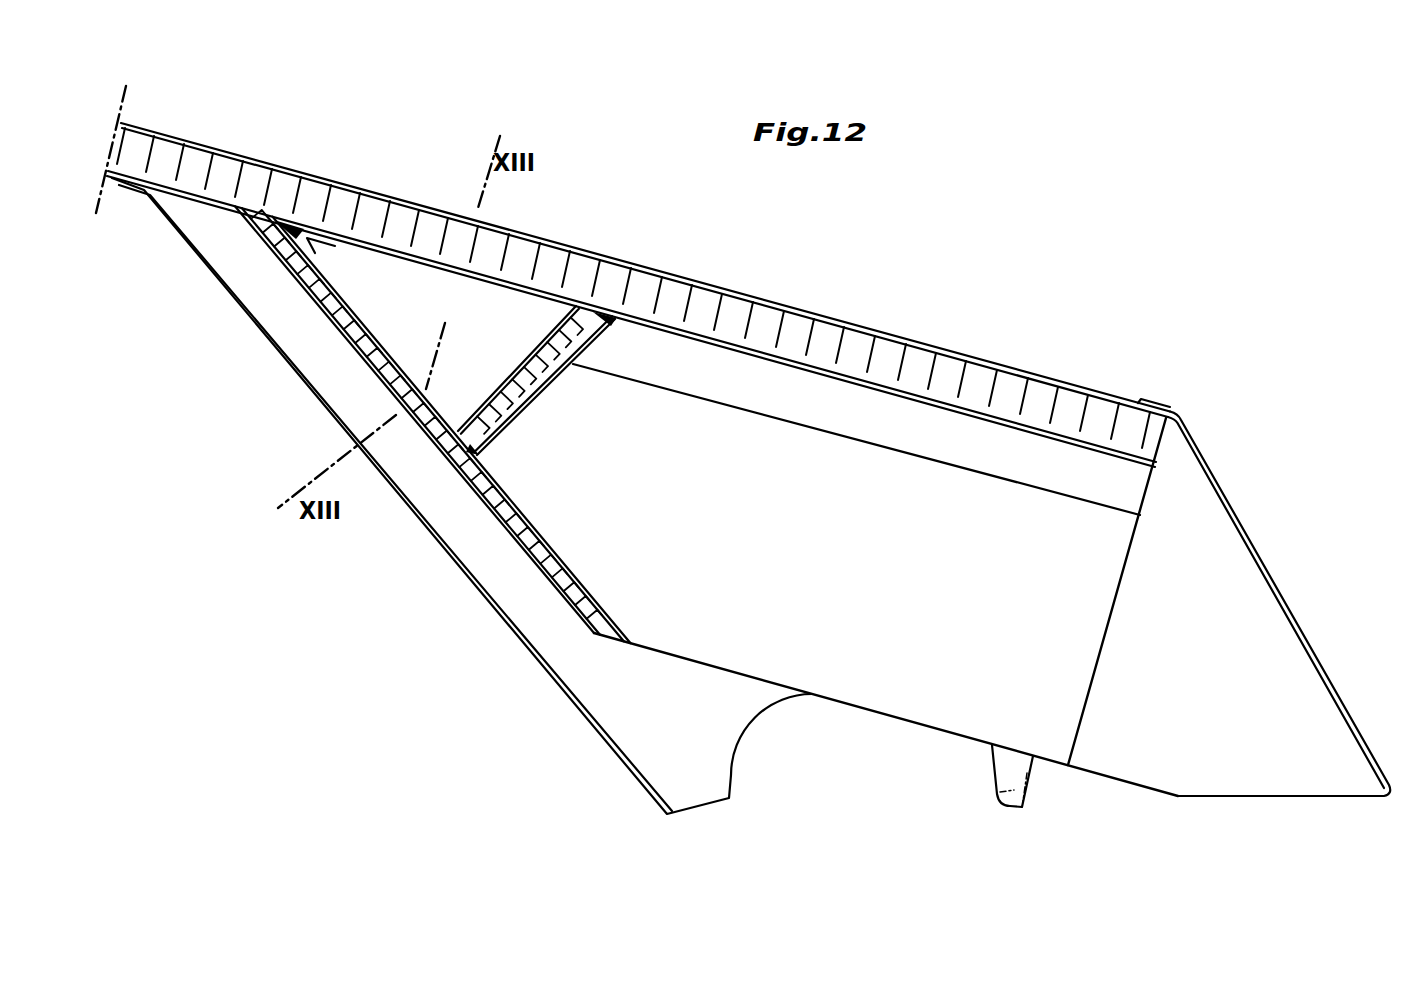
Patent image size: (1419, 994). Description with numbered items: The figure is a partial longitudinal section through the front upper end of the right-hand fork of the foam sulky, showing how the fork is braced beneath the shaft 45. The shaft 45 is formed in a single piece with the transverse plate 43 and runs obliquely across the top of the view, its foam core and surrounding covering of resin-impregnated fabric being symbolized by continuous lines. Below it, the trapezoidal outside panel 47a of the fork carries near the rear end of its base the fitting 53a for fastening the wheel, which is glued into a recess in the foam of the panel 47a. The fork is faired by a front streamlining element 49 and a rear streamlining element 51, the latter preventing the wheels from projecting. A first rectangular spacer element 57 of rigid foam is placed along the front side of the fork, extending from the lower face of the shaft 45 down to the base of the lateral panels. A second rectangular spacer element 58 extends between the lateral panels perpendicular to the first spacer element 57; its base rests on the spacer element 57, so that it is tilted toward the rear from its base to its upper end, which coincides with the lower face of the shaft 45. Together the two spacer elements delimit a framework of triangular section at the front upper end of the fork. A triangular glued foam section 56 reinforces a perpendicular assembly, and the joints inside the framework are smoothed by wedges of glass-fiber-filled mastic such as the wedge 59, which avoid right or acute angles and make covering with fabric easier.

The transverse plate 43 is at (980, 377).
The shaft 45 is at (190, 150).
The outside panel 47a is at (880, 662).
The front streamlining element 49 is at (617, 702).
The rear streamlining element 51 is at (1192, 527).
The fitting 53a is at (1020, 767).
The triangular glued foam section 56 is at (840, 387).
The first rectangular spacer element 57 is at (463, 480).
The second rectangular spacer element 58 is at (552, 320).
The wedge of mastic 59 is at (293, 216).